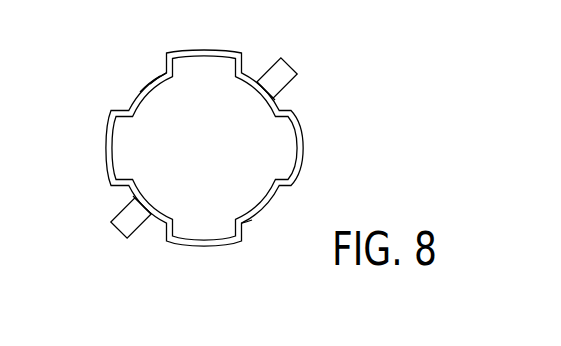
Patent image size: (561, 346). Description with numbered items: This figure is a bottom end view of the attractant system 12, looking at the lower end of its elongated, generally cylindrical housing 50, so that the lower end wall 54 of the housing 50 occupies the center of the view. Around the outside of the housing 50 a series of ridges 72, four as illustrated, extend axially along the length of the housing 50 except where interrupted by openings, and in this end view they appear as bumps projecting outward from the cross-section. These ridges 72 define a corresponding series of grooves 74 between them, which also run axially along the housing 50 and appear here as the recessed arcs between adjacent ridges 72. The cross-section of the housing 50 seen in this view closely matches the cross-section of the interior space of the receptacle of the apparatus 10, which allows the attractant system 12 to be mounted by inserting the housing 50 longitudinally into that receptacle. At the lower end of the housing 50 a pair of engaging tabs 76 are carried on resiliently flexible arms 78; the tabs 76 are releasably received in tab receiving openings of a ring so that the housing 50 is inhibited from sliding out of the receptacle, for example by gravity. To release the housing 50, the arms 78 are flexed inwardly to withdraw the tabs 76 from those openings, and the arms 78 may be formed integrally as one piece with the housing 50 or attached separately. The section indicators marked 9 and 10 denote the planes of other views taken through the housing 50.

The section line 9- 9 is at (205, 40).
The apparatus 10 is at (97, 147).
The attractant system 12 is at (398, 116).
The housing 50 is at (160, 76).
The lower end wall 54 is at (218, 155).
The ridges 72 is at (223, 52).
The grooves 74 is at (140, 92).
The engaging tabs 76 is at (281, 62).
The resiliently flexible arms 78 is at (262, 92).